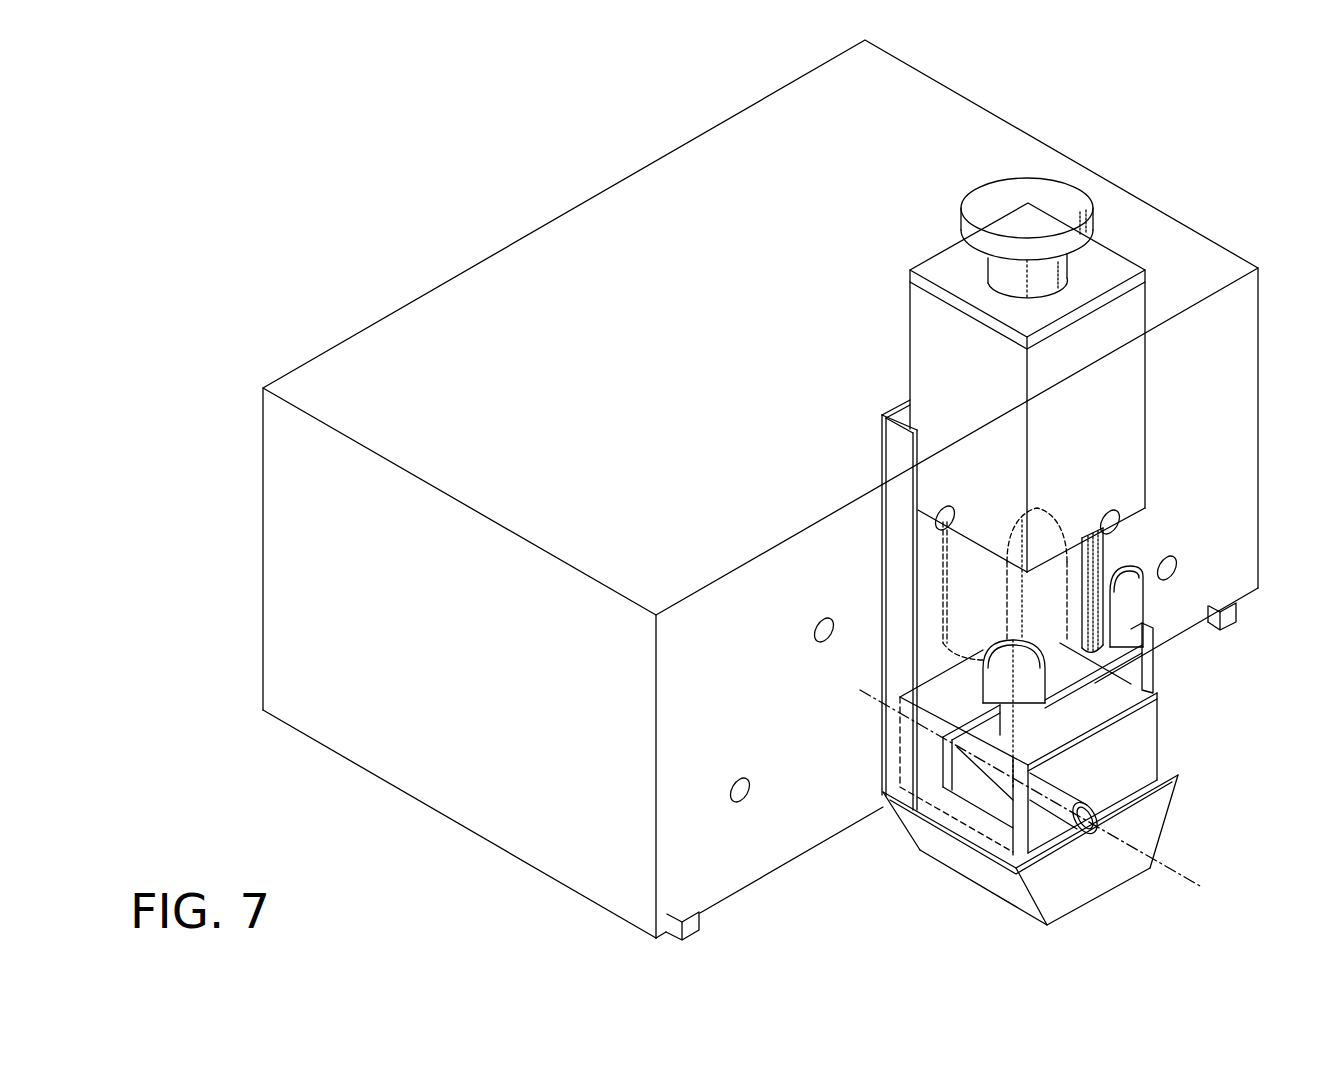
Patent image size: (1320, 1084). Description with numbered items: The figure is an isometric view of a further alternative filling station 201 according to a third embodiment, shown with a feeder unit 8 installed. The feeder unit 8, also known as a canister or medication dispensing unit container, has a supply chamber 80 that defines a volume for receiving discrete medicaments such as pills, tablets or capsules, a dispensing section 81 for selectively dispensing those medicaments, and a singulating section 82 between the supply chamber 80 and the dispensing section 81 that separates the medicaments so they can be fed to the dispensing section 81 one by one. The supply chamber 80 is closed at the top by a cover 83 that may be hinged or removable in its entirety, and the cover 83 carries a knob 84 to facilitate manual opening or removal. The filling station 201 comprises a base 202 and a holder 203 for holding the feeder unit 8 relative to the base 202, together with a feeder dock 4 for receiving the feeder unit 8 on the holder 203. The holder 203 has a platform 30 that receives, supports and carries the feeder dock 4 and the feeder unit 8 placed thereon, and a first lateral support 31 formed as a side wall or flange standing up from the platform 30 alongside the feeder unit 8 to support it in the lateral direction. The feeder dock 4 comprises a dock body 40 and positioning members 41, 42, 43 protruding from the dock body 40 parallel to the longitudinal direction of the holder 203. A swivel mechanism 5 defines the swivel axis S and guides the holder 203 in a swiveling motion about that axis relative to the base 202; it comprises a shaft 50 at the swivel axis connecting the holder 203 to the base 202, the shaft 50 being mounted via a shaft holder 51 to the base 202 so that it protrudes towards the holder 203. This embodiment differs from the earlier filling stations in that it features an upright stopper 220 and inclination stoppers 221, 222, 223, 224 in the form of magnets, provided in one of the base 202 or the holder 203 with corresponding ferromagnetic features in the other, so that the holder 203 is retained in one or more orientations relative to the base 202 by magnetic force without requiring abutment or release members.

The filling station 201 is at (288, 198).
The base 202 is at (265, 565).
The holder 203 is at (975, 862).
The upright stopper 220 is at (947, 506).
The inclination stopper 221 is at (1173, 560).
The inclination stopper 222 is at (750, 790).
The inclination stopper 223 is at (1114, 512).
The inclination stopper 224 is at (816, 632).
The platform 30 is at (1030, 868).
The first lateral support 31 is at (887, 572).
The feeder dock 4 is at (1047, 650).
The dock body 40 is at (1155, 730).
The positioning member 41 is at (997, 670).
The positioning member 42 is at (1140, 603).
The positioning member 43 is at (1050, 525).
The swivel mechanism 5 is at (1041, 817).
The shaft 50 is at (1057, 823).
The shaft holder 51 is at (942, 785).
The feeder unit 8 is at (1079, 393).
The supply chamber 80 is at (1137, 367).
The dispensing section 81 is at (1147, 637).
The singulating section 82 is at (1100, 535).
The cover 83 is at (1118, 268).
The knob 84 is at (1041, 190).